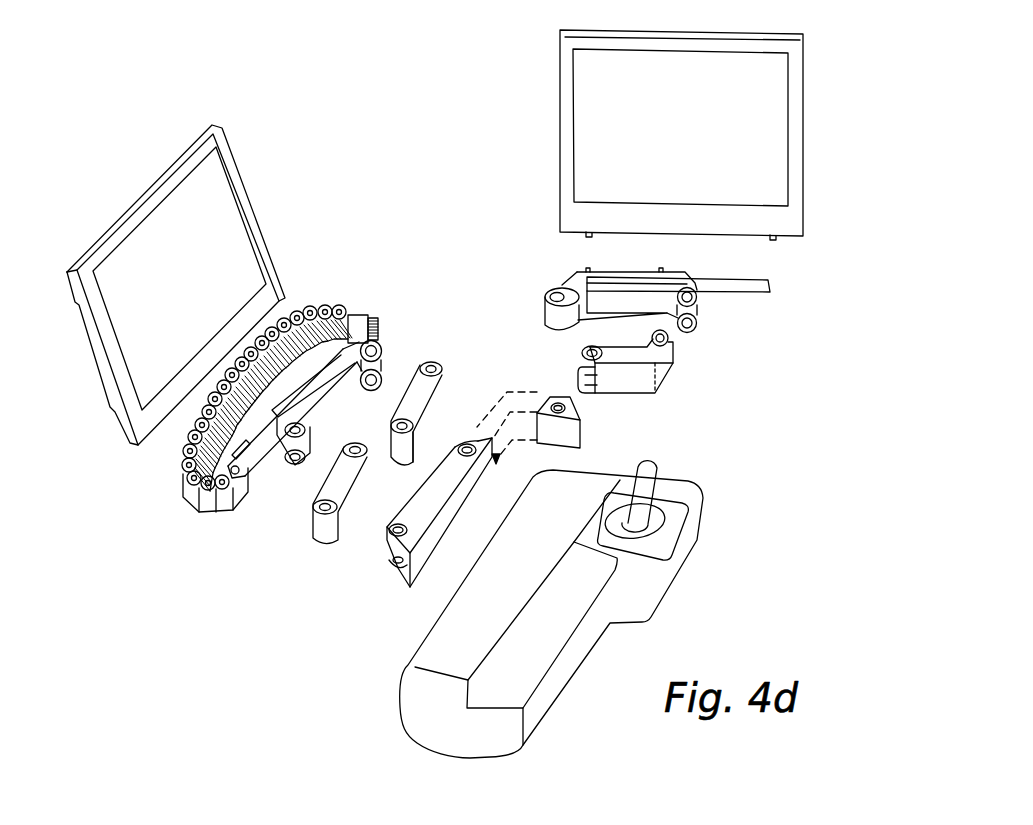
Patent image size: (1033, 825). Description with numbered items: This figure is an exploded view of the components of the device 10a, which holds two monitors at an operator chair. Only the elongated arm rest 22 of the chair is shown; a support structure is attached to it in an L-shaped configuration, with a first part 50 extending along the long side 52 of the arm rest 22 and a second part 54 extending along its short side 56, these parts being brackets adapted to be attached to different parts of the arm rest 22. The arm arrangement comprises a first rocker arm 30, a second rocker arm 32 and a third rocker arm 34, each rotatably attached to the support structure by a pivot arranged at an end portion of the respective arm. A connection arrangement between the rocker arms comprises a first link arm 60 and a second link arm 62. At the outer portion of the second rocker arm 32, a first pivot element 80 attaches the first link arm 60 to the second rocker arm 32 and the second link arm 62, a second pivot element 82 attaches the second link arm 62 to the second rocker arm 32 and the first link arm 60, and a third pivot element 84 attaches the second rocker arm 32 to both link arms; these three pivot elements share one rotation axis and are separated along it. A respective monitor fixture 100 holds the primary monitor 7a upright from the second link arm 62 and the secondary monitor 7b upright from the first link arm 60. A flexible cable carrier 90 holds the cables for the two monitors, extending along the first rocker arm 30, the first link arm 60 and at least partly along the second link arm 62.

The primary monitor 7a is at (597, 117).
The secondary monitor 7b is at (153, 233).
The device 10a is at (217, 597).
The arm rest 22 is at (533, 647).
The first rocker arm 30 is at (320, 525).
The second rocker arm 32 is at (433, 397).
The third rocker arm 34 is at (667, 367).
The first part 50 is at (390, 547).
The long side 52 is at (420, 637).
The second part 54 is at (556, 400).
The short side 56 is at (605, 472).
The first link arm 60 is at (349, 313).
The second link arm 62 is at (577, 283).
The first pivot element 80 is at (372, 345).
The second pivot element 82 is at (555, 297).
The third pivot element 84 is at (431, 368).
The flexible cable carrier 90 is at (182, 477).
The monitor fixture 100 is at (743, 287).